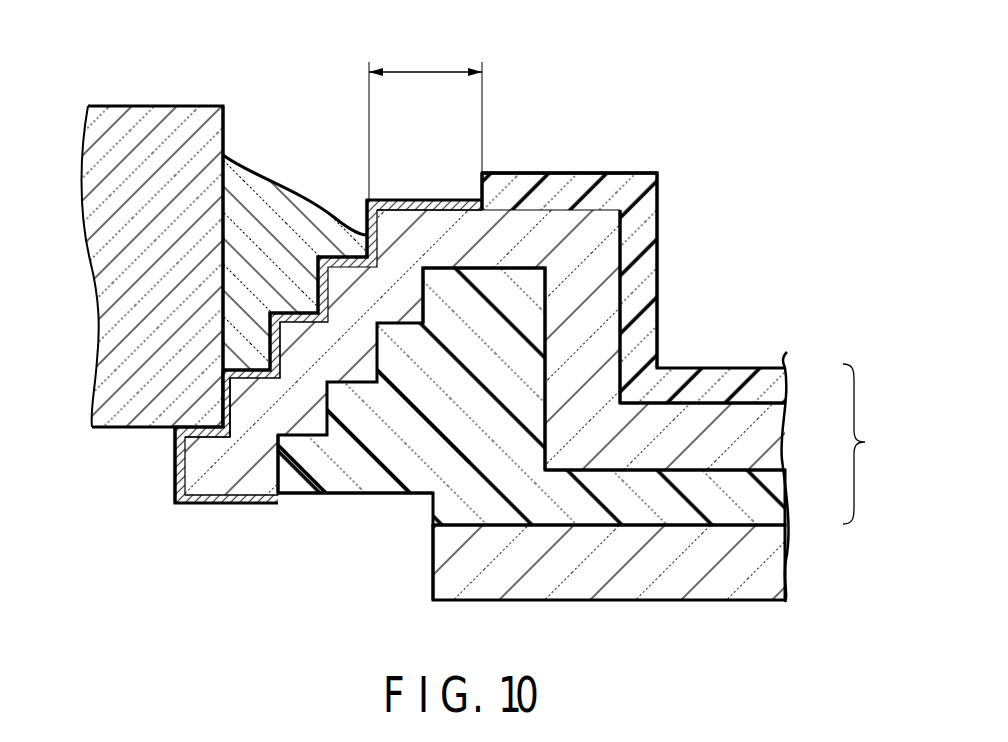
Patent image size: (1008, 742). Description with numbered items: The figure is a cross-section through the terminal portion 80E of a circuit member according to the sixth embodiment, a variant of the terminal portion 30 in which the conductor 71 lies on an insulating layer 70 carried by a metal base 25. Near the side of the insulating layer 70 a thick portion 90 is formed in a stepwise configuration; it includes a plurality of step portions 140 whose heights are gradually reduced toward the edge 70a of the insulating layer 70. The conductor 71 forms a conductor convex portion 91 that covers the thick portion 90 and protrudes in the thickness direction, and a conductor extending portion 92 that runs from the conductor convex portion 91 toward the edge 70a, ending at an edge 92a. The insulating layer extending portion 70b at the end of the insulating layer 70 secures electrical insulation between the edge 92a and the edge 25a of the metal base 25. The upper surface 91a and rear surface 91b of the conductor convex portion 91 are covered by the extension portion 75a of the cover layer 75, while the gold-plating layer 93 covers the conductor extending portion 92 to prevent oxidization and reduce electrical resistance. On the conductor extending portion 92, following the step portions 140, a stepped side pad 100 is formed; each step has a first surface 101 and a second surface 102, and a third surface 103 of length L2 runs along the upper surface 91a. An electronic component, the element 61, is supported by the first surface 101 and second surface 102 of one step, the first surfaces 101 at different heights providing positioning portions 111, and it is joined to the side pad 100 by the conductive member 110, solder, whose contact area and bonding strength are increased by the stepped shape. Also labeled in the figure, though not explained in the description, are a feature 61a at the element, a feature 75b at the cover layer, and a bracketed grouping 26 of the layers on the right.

The element 61 is at (93, 212).
The side surface of first member 61a is at (223, 132).
The conductive member 110 is at (260, 196).
The stepped side pad 100 is at (289, 296).
The first surface 101 is at (328, 262).
The second surface 102 is at (364, 227).
The third surface 103 is at (395, 205).
The conductor convex portion 91 is at (428, 212).
The upper surface 91a is at (458, 208).
The rear surface 91b is at (624, 242).
The conductor extending portion 92 is at (250, 435).
The edge 92a is at (176, 484).
The gold-plating layer 93 is at (222, 393).
The positioning portions 111 is at (212, 427).
The cover layer 75 is at (774, 387).
The extension portion 75a is at (571, 173).
The side surface of protective film 75b is at (482, 190).
The conductor 71 is at (774, 427).
The insulating layer 70 is at (759, 498).
The edge 70a is at (277, 474).
The insulating layer extending portion 70b is at (392, 497).
The thick portion 90 is at (532, 335).
The step portions 140 is at (382, 360).
The metal base 25 is at (776, 558).
The edge 25a is at (431, 580).
The functional layer 26 is at (869, 444).
The terminal portion 30 is at (763, 346).
The terminal portion 80E is at (628, 133).
The length L2 is at (427, 70).